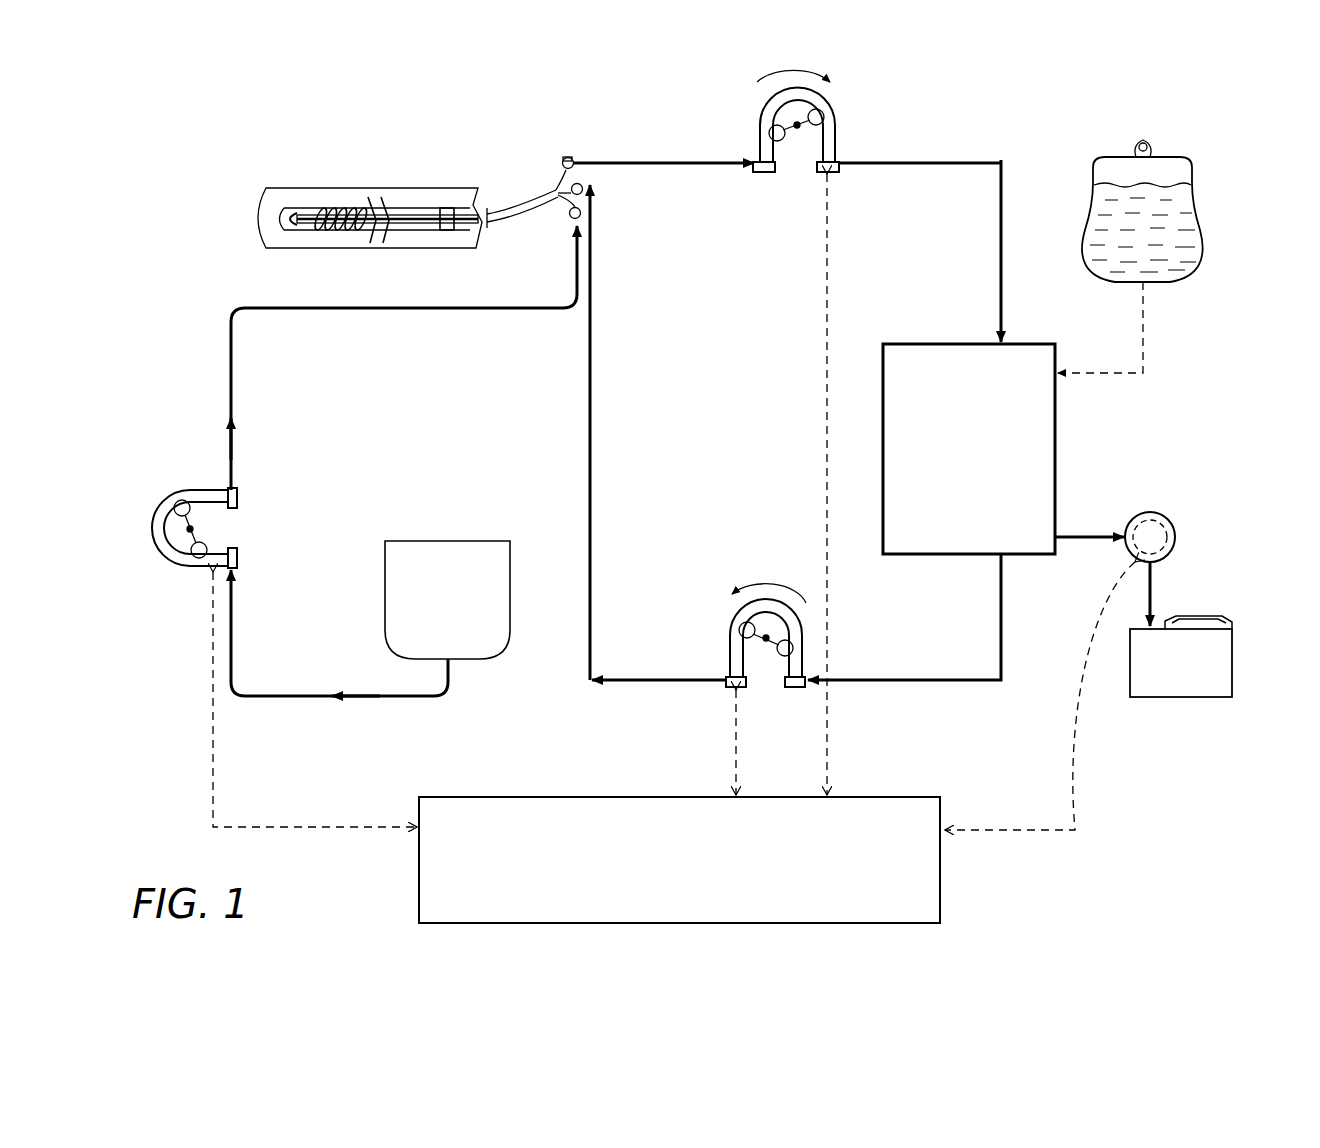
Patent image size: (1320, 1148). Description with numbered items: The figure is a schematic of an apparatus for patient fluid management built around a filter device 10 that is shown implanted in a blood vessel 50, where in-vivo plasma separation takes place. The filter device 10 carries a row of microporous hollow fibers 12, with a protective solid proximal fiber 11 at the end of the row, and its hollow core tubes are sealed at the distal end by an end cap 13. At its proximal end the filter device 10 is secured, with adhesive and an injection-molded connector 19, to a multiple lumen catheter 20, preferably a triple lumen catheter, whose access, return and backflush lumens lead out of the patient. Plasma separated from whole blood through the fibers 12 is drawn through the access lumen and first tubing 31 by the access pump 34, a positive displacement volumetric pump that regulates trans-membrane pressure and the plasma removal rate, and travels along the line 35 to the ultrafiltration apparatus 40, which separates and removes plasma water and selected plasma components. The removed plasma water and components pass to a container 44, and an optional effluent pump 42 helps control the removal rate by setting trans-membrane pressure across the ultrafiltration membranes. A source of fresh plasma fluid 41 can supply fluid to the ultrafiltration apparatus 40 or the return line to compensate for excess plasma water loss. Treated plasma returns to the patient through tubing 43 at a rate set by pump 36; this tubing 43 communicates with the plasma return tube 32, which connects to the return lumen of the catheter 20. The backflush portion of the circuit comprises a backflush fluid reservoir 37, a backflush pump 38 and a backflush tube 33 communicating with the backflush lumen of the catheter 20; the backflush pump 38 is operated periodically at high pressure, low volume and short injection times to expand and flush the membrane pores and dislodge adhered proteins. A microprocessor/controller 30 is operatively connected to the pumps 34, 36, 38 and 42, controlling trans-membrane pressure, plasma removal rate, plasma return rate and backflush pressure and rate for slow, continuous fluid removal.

The filter device 10 is at (375, 212).
The proximal fiber 11 is at (404, 215).
The microporous fibers 12 is at (332, 210).
The distal end cap 13 is at (293, 213).
The injection-molded connector 19 is at (447, 208).
The multiple lumen catheter 20 is at (520, 205).
The microprocessor/controller 30 is at (942, 866).
The first tubing 31 is at (560, 181).
The plasma return tube 32 is at (585, 186).
The backflush tube 33 is at (572, 201).
The access pump 34 is at (838, 102).
The flow line to ultrafiltration apparatus 35 is at (965, 163).
The pump 36 is at (728, 642).
The backflush fluid reservoir 37 is at (385, 584).
The backflush pump 38 is at (156, 508).
The ultrafiltration apparatus 40 is at (1057, 422).
The source of fresh plasma fluid 41 is at (1180, 163).
The effluent pump 42 is at (1172, 525).
The tubing 43 is at (900, 681).
The container 44 is at (1233, 671).
The blood vessel 50 is at (365, 250).